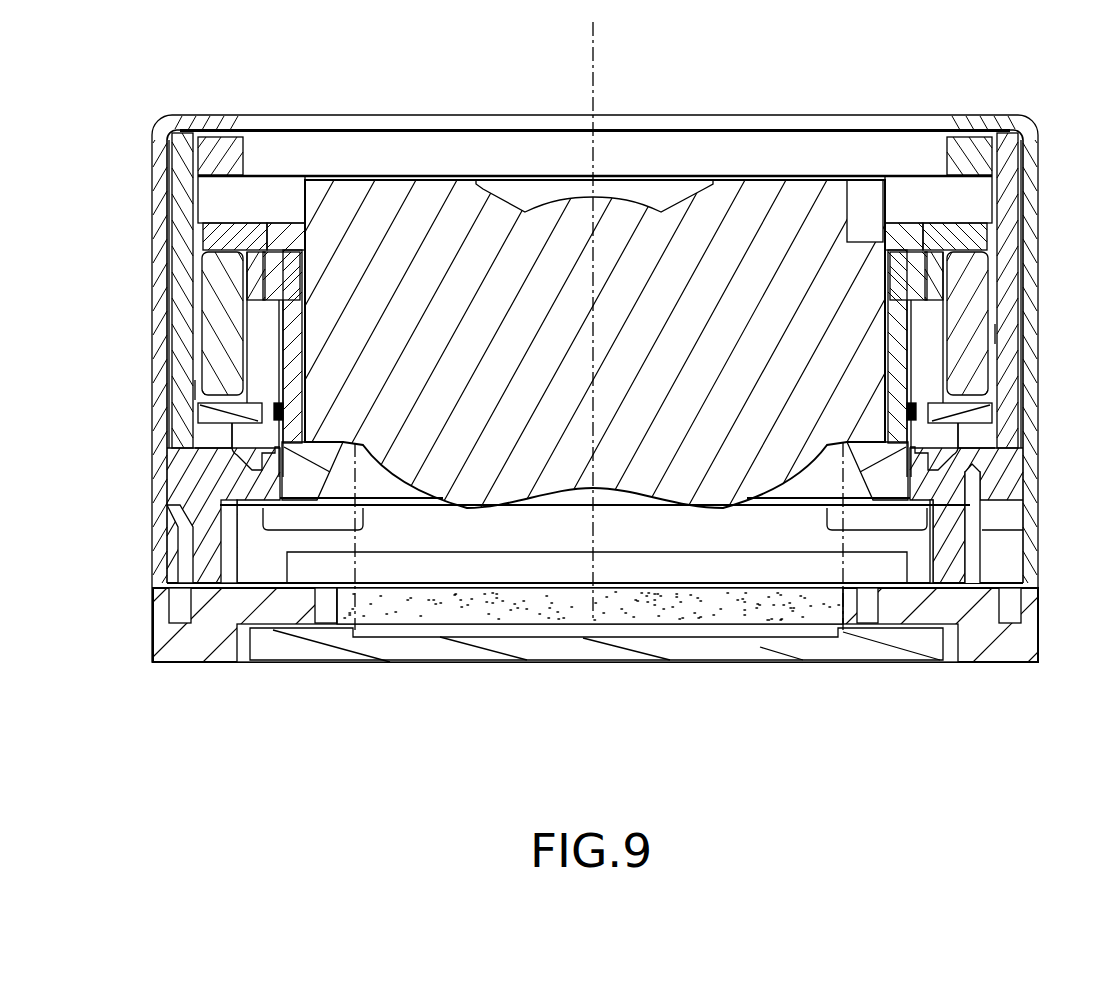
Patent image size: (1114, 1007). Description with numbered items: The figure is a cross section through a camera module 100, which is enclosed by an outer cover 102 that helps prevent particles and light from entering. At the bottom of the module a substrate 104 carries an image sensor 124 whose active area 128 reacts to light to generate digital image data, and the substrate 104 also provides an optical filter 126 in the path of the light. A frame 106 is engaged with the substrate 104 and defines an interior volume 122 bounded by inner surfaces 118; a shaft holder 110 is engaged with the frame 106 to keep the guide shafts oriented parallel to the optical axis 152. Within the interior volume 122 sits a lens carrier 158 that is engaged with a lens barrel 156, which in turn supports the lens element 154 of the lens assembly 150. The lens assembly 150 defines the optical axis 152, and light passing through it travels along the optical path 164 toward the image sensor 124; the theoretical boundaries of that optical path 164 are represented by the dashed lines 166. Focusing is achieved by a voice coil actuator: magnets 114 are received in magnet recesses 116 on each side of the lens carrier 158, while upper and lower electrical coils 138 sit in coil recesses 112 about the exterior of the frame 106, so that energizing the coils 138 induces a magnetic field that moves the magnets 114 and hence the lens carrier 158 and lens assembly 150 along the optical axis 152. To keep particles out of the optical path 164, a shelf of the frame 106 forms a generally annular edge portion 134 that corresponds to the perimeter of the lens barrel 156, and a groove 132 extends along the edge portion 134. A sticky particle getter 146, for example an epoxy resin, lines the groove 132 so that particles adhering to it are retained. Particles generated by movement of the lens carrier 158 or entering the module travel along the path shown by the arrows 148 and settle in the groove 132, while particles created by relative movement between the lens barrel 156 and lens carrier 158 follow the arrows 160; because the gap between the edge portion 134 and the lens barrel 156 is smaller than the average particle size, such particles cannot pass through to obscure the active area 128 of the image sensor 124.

The camera module 100 is at (976, 90).
The outer cover 102 is at (160, 118).
The substrate 104 is at (192, 655).
The frame 106 is at (185, 462).
The shaft holder 110 is at (976, 152).
The coil recesses 112 is at (186, 217).
The magnets 114 is at (238, 334).
The magnet recesses 116 is at (222, 243).
The inner surfaces 118 is at (222, 437).
The interior volume 122 is at (290, 207).
The image sensor 124 is at (627, 656).
The optical filter 126 is at (731, 627).
The active area 128 is at (530, 656).
The groove 132 is at (246, 478).
The edge portion 134 is at (263, 496).
The electrical coils 138 is at (193, 252).
The particle getter 146 is at (288, 440).
The arrows 148 is at (195, 388).
The lens assembly 150 is at (746, 162).
The optical axis 152 is at (598, 78).
The lens element 154 is at (640, 202).
The lens barrel 156 is at (297, 345).
The lens carrier 158 is at (280, 296).
The arrows 160 is at (285, 367).
The optical path 164 is at (671, 544).
The dashed lines 166 is at (355, 612).